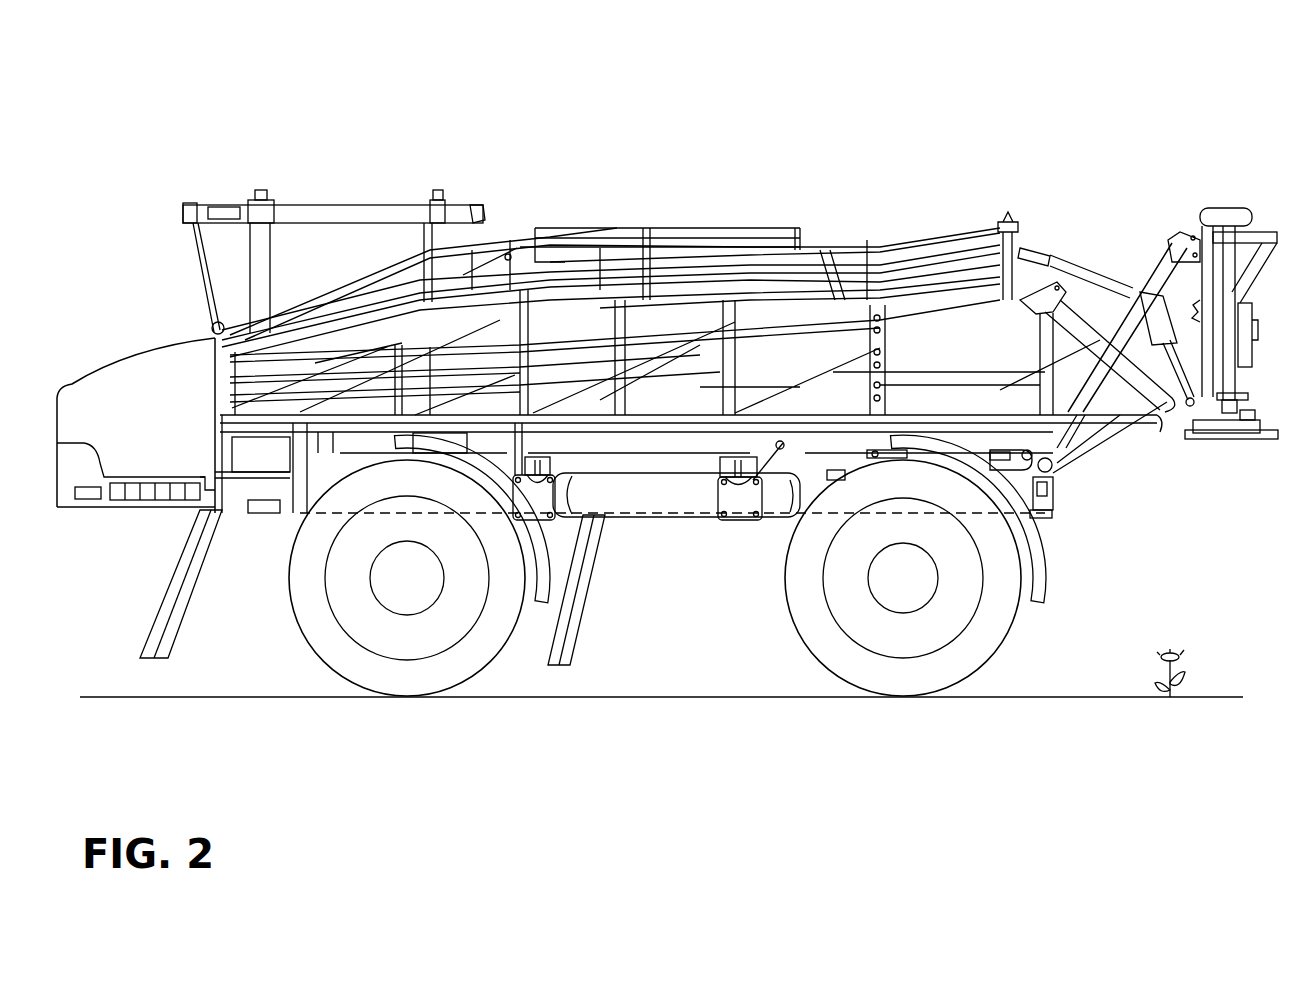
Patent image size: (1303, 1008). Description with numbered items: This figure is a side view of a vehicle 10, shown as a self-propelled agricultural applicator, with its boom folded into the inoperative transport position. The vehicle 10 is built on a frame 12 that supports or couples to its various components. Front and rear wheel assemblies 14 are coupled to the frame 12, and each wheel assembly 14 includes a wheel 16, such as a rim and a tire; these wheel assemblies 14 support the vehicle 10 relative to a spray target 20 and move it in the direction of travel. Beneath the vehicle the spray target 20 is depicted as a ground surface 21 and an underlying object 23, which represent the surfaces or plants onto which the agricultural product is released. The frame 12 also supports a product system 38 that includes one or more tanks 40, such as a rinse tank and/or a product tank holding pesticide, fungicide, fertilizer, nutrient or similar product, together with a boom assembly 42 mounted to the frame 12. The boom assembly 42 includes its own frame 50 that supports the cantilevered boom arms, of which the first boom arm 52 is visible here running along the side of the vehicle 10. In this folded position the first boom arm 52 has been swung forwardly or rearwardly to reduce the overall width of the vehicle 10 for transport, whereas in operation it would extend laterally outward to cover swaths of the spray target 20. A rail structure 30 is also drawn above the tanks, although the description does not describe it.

The vehicle 10 is at (1052, 156).
The frame 12 is at (668, 500).
The wheel assemblies 14 is at (312, 659).
The wheel 16 is at (480, 652).
The spray target 20 is at (1200, 640).
The ground surface 21 is at (1190, 697).
The underlying object 23 is at (1172, 655).
The rail / platform 30 is at (330, 200).
The product system 38 is at (642, 222).
The tanks 40 is at (553, 258).
The boom assembly 42 is at (882, 203).
The frame 50 is at (1252, 208).
The first boom arm 52 is at (841, 243).